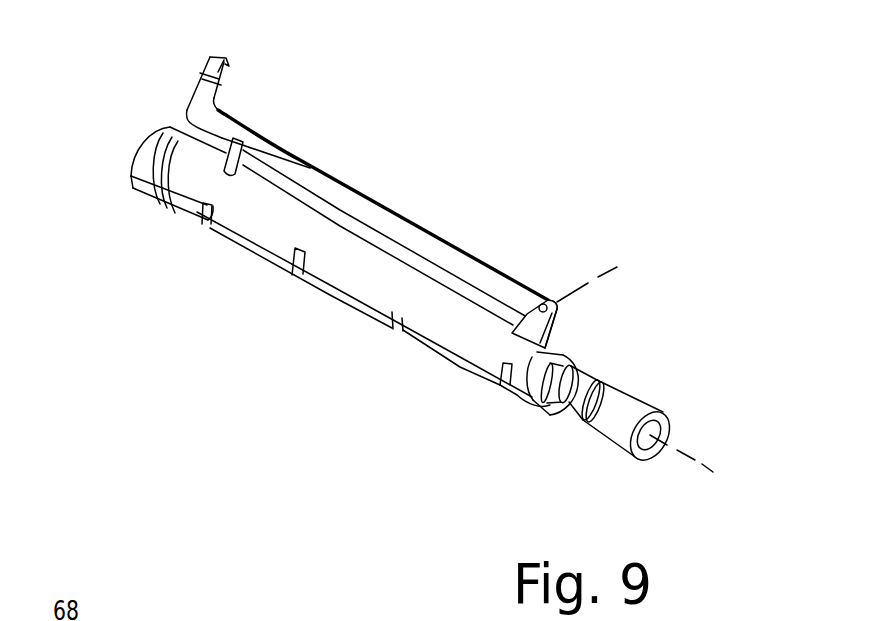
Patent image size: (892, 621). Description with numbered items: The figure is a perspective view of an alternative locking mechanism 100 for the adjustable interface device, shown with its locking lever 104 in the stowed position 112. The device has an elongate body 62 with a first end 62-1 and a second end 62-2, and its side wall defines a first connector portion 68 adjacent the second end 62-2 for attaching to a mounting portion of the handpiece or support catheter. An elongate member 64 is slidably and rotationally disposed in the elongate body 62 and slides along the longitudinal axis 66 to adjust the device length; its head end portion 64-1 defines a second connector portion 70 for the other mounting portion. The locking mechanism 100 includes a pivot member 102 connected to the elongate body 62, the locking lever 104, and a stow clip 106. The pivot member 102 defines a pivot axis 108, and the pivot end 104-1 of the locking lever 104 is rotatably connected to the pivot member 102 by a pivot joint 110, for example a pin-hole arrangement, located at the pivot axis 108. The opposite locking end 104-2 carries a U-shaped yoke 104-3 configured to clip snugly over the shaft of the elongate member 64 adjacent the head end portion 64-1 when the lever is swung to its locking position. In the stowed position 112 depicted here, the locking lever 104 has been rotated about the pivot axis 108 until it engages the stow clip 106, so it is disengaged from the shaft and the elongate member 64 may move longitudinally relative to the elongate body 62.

The locking mechanism 100 is at (543, 147).
The elongate body 62 is at (328, 301).
The first end 62-1 is at (547, 408).
The second end 62-2 is at (133, 152).
The elongate member 64 is at (693, 403).
The head end portion 64-1 is at (565, 430).
The longitudinal axis 66 is at (703, 463).
The first connector portion 68 is at (138, 203).
The second connector portion 70 is at (638, 387).
The pivot member 102 is at (533, 328).
The locking lever 104 is at (385, 197).
The pivot end 104-1 is at (538, 268).
The locking end 104-2 is at (247, 90).
The U-shaped yoke 104-3 is at (210, 57).
The stow clip 106 is at (232, 170).
The pivot axis 108 is at (592, 280).
The pivot joint 110 is at (566, 314).
The stowed position 112 is at (430, 190).